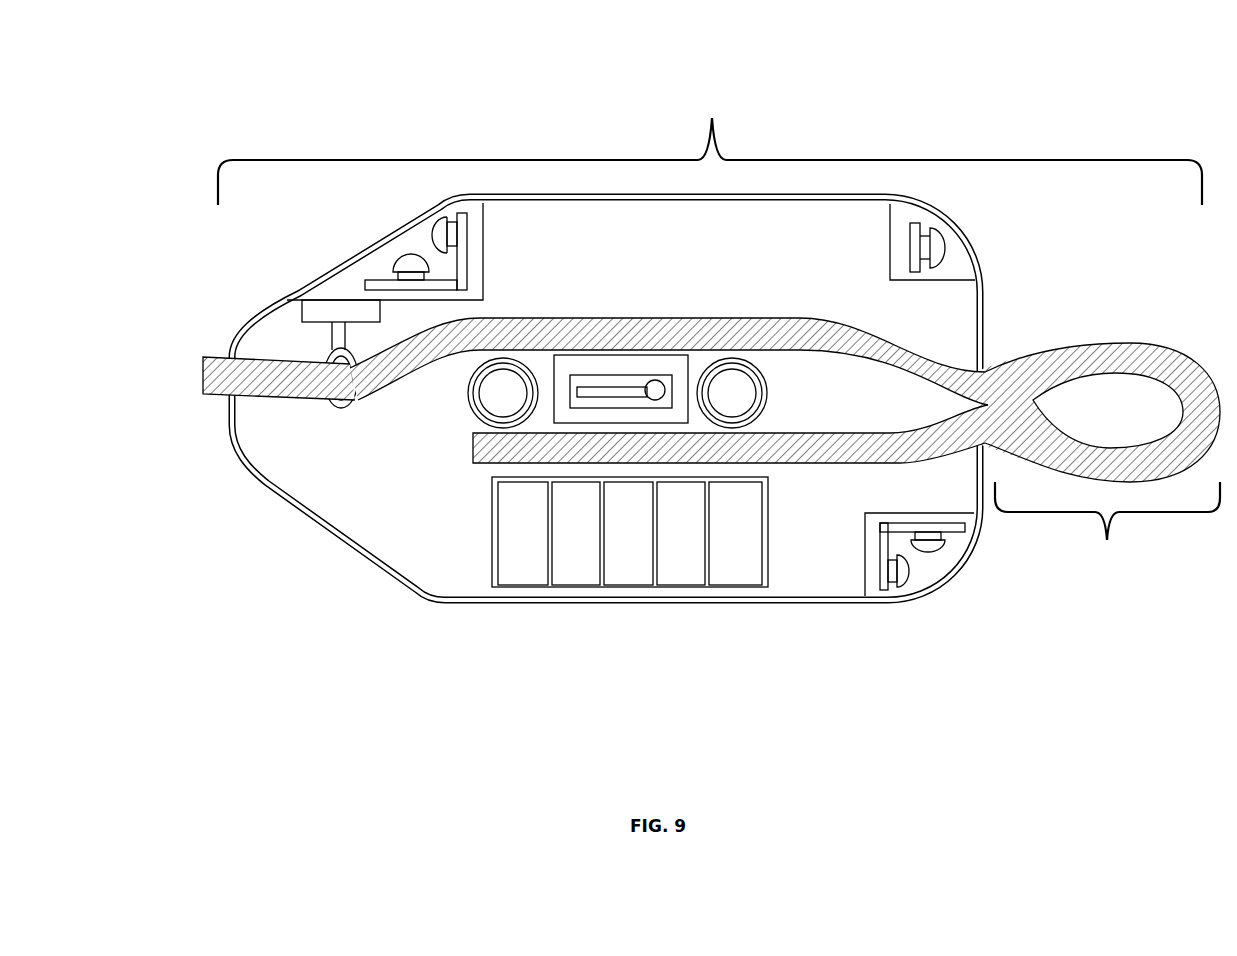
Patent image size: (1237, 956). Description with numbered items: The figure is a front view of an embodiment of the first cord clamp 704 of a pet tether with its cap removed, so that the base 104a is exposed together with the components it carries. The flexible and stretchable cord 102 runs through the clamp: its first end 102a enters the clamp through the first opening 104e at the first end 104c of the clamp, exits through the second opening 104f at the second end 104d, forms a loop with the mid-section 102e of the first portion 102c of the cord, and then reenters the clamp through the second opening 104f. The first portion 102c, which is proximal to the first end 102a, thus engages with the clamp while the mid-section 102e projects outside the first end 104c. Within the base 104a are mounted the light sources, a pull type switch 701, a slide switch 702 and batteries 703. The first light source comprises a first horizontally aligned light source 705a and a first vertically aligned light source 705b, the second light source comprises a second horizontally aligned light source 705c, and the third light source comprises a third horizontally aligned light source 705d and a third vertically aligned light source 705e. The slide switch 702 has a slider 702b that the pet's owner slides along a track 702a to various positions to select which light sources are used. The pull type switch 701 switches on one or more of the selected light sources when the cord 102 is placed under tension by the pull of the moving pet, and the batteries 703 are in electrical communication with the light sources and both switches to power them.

The first cord clamp 704 is at (465, 100).
The flexible and stretchable cord 102 is at (217, 375).
The first end of the flexible and stretchable cord 102a is at (475, 457).
The first portion of the flexible and stretchable cord 102c is at (710, 147).
The mid-section of the first portion 102e is at (1107, 541).
The base 104a is at (435, 538).
The first end of the first cord clamp 104c is at (231, 432).
The second end of the first cord clamp 104d is at (986, 340).
The first opening 104e is at (232, 357).
The second opening 104f is at (990, 405).
The pull type switch 701 is at (328, 310).
The slide switch 702 is at (625, 424).
The track 702a is at (603, 395).
The slider 702b is at (657, 403).
The batteries 703 is at (585, 563).
The first horizontally aligned light source 705a is at (433, 235).
The first vertically aligned light source 705b is at (395, 262).
The second horizontally aligned light source 705c is at (945, 248).
The third horizontally aligned light source 705d is at (907, 572).
The third vertically aligned light source 705e is at (932, 548).